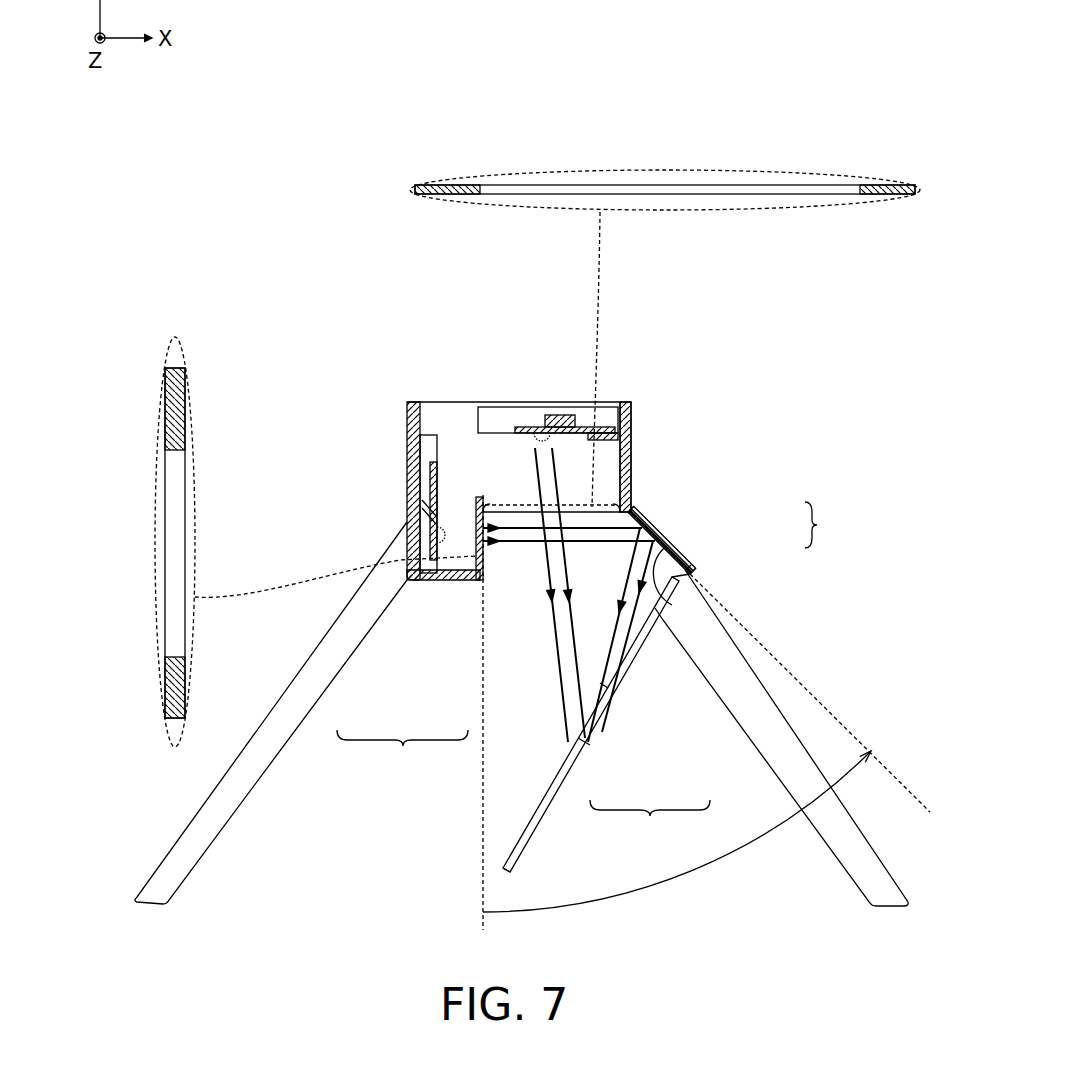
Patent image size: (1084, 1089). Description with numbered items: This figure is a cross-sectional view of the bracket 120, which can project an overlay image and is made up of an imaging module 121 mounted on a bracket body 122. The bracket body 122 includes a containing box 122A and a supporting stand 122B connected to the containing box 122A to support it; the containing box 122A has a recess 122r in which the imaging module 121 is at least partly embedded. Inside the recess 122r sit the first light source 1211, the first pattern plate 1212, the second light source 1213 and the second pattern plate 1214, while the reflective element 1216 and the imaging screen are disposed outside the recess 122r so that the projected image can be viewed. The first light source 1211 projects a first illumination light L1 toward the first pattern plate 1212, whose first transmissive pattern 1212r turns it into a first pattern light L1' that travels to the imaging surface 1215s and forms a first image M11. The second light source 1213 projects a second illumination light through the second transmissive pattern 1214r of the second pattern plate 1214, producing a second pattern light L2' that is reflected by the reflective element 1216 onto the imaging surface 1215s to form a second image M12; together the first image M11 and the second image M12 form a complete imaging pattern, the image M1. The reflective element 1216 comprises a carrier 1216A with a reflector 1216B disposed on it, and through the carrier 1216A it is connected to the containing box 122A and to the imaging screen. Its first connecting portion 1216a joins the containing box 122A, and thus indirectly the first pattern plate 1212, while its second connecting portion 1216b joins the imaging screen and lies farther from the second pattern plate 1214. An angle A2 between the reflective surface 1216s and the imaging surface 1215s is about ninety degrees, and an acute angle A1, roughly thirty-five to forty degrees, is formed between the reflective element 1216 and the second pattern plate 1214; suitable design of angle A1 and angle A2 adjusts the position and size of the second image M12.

The bracket 120 is at (390, 305).
The imaging module 121 is at (628, 353).
The first light source 1211 is at (542, 427).
The first pattern plate 1212 is at (437, 185).
The first transmissive pattern 1212r is at (820, 193).
The second light source 1213 is at (440, 533).
The second pattern plate 1214 is at (172, 680).
The second transmissive pattern 1214r is at (175, 597).
The imaging surface 1215s is at (525, 827).
The reflective element 1216 is at (779, 646).
The first connecting portion 1216a is at (635, 514).
The second connecting portion 1216b is at (692, 573).
The carrier 1216A is at (648, 528).
The reflector 1216B is at (660, 543).
The reflective surface 1216s is at (672, 565).
The bracket body 122 is at (402, 750).
The containing box 122A is at (458, 580).
The supporting stand 122B is at (363, 618).
The recess 122r is at (452, 420).
The first illumination light L1 is at (533, 555).
The first pattern light L1' is at (580, 635).
The second pattern light L2' is at (569, 572).
The angle between reflective element and second pattern plate A1 is at (677, 712).
The angle between reflective surface and imaging surface A2 is at (663, 612).
The image M1 is at (650, 821).
The first image M11 is at (580, 740).
The second image M12 is at (603, 685).